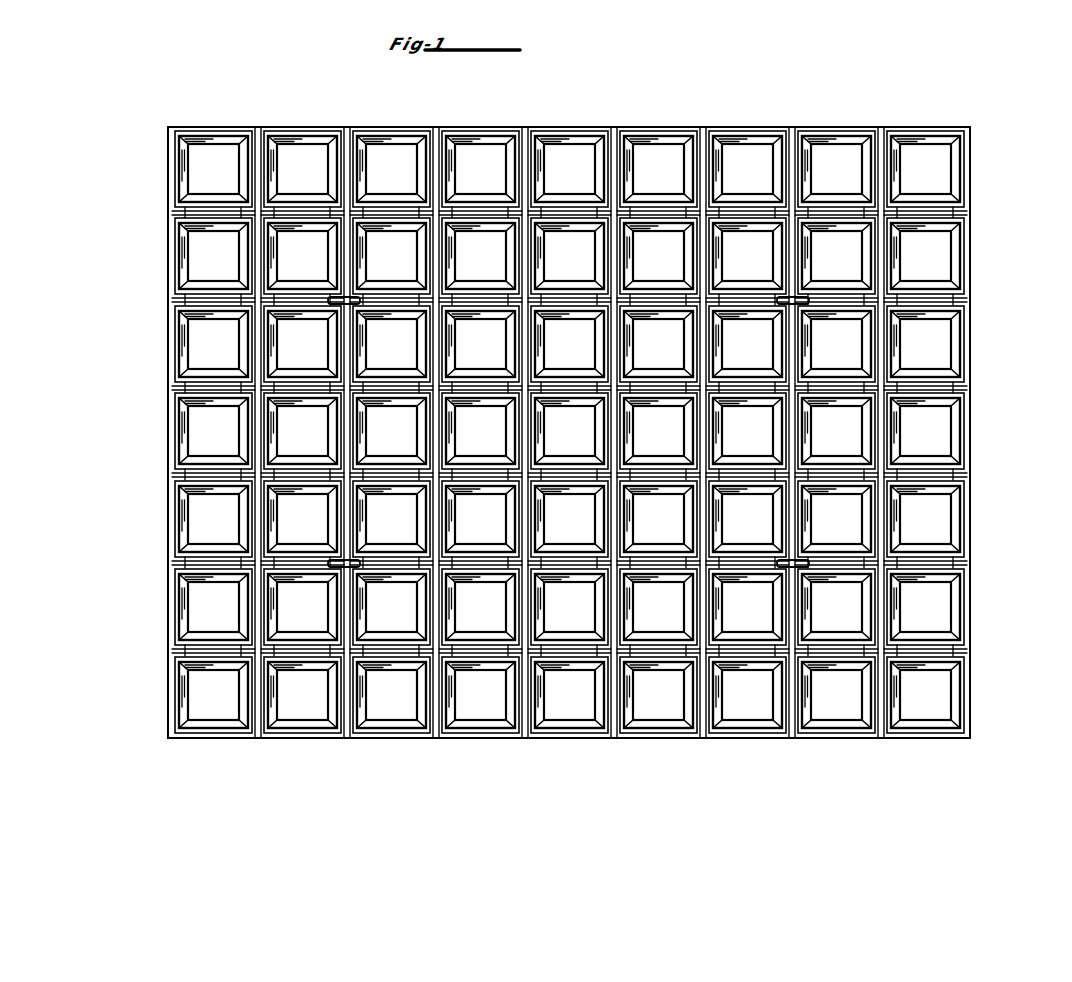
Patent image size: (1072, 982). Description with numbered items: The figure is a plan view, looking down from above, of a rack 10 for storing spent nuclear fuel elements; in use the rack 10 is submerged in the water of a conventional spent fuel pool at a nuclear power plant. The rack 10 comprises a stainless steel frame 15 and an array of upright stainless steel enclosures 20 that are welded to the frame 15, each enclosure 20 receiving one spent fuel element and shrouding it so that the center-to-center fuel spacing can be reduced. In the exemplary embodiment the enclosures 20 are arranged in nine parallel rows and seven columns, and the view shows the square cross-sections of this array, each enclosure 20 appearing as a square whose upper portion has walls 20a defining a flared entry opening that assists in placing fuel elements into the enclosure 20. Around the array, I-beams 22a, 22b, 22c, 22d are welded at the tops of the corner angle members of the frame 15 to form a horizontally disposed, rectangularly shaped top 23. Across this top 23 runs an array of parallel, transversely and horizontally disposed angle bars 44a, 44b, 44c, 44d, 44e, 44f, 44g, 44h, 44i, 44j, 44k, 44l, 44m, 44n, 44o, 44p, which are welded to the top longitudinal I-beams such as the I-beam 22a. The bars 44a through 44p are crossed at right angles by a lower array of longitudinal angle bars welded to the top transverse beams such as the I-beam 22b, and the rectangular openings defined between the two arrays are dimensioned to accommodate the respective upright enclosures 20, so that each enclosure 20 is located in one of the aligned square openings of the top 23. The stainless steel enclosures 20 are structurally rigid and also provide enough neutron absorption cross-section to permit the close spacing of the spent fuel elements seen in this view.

The rack 10 is at (620, 98).
The frame 15 is at (978, 188).
The upright enclosure 20 is at (292, 130).
The walls 20a is at (918, 132).
The I-beam 22a is at (932, 738).
The I-beam 22b is at (962, 652).
The I-beam 22c is at (948, 127).
The I-beam 22d is at (175, 476).
The top 23 is at (978, 131).
The angle bar 44a is at (183, 563).
The angle bar 44b is at (263, 649).
The angle bar 44c is at (330, 738).
The angle bar 44d is at (358, 127).
The angle bar 44e is at (423, 738).
The angle bar 44f is at (452, 127).
The angle bar 44g is at (513, 738).
The angle bar 44h is at (538, 127).
The angle bar 44i is at (600, 738).
The angle bar 44j is at (628, 127).
The angle bar 44k is at (690, 738).
The angle bar 44l is at (716, 127).
The angle bar 44m is at (780, 738).
The angle bar 44n is at (808, 127).
The angle bar 44o is at (868, 738).
The angle bar 44p is at (960, 565).